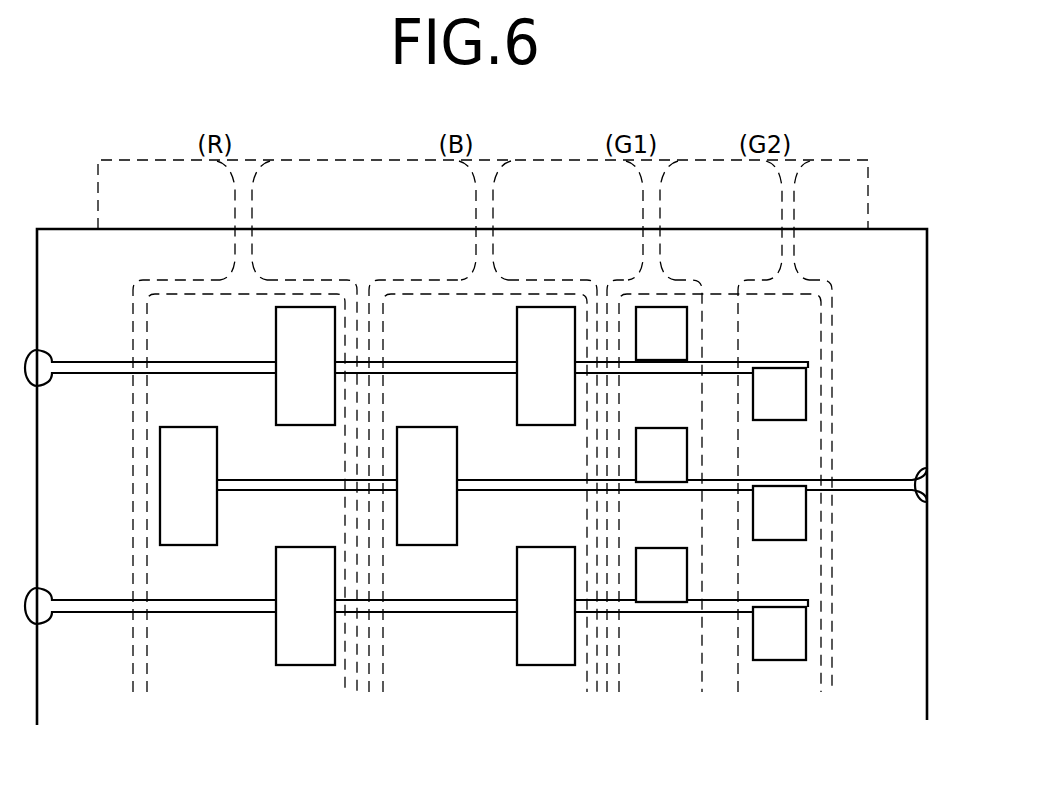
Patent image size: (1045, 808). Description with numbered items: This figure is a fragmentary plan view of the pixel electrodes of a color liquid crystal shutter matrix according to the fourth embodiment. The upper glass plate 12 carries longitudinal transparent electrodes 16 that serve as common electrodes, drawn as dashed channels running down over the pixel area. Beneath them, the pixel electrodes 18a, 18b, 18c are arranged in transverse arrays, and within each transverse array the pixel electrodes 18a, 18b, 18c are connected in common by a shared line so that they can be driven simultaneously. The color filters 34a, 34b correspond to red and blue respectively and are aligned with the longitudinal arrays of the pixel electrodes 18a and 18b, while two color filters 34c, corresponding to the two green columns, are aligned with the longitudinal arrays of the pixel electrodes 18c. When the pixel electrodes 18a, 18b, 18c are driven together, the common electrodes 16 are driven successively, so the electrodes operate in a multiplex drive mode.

The upper glass plate 12 is at (117, 184).
The longitudinal transparent electrodes 16 is at (259, 157).
The color filter 34a is at (167, 290).
The color filter 34b is at (406, 306).
The color filter 34c is at (627, 280).
The pixel electrode 18a is at (276, 333).
The pixel electrode 18b is at (517, 334).
The pixel electrode 18c is at (687, 327).